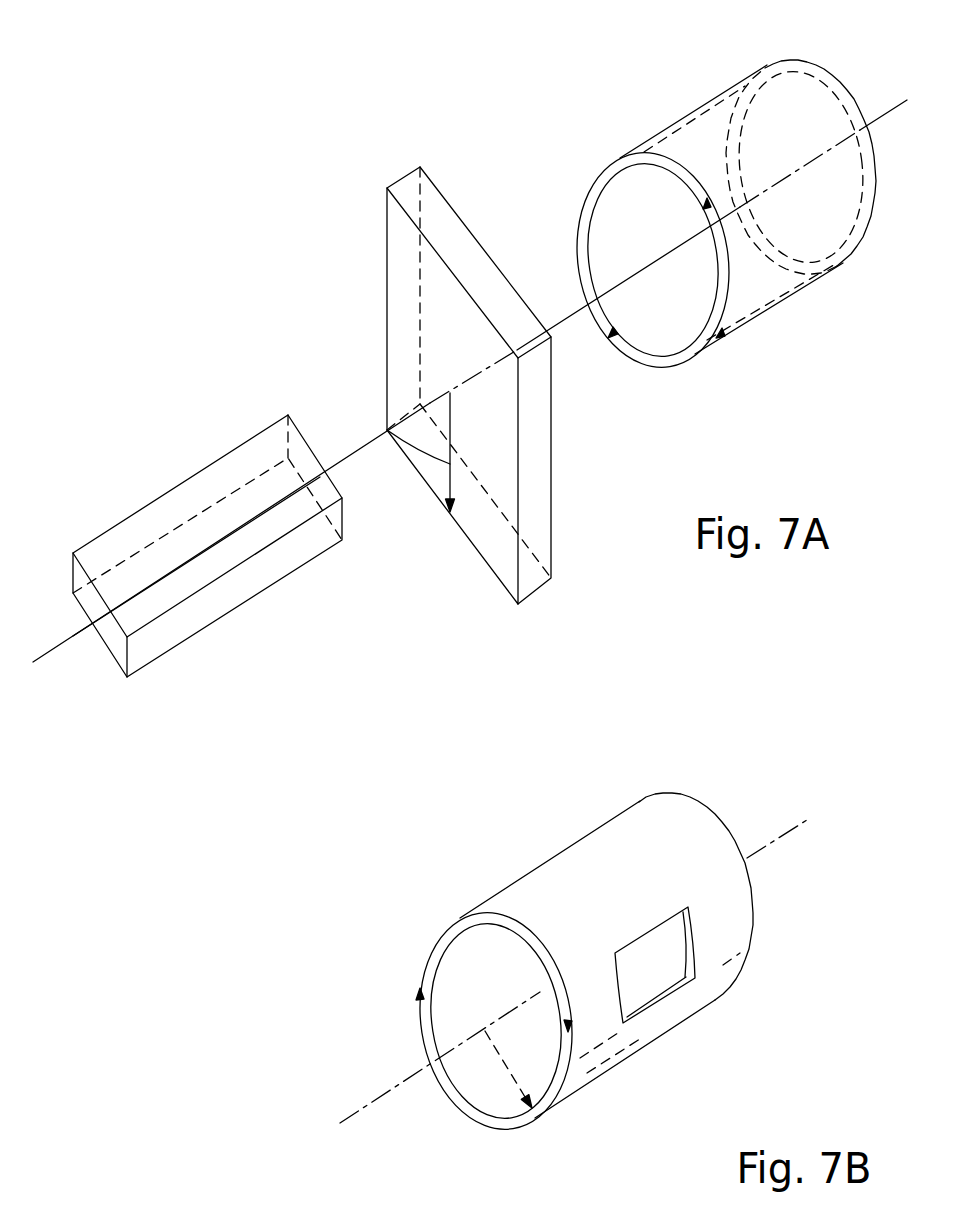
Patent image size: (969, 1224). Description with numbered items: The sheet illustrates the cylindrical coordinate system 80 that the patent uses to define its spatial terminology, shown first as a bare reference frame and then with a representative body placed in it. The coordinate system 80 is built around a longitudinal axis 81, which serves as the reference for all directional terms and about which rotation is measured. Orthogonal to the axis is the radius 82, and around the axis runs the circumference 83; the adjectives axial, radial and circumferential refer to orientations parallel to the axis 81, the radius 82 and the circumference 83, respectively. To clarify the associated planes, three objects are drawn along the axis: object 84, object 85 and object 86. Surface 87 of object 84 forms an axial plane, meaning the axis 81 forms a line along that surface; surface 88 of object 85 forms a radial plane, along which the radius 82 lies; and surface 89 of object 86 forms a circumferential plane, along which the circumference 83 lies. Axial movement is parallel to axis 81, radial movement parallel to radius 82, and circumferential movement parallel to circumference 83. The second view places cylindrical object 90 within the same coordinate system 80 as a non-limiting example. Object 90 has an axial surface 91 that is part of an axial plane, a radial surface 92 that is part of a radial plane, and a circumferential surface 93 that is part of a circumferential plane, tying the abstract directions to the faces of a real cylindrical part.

In FIG. 7A, the cylindrical coordinate system 80 is at (300, 204).
In FIG. 7B, the cylindrical coordinate system 80 is at (738, 778).
In FIG. 7A, the longitudinal axis 81 is at (878, 118).
In FIG. 7B, the longitudinal axis 81 is at (373, 1100).
In FIG. 7A, the radius 82 is at (393, 433).
In FIG. 7B, the radius 82 is at (508, 1062).
In FIG. 7A, the circumference 83 is at (578, 247).
In FIG. 7B, the circumference 83 is at (461, 1054).
In FIG. 7A, the object 84 is at (160, 670).
In FIG. 7A, the object 85 is at (456, 407).
In FIG. 7A, the object 86 is at (756, 349).
In FIG. 7A, the surface 87 is at (197, 572).
In FIG. 7A, the surface 88 is at (400, 308).
In FIG. 7A, the surface 89 is at (693, 110).
In FIG. 7B, the cylindrical object 90 is at (615, 793).
In FIG. 7B, the axial surface 91 is at (660, 997).
In FIG. 7B, the radial surface 92 is at (475, 1112).
In FIG. 7B, the circumferential surface 93 is at (606, 912).